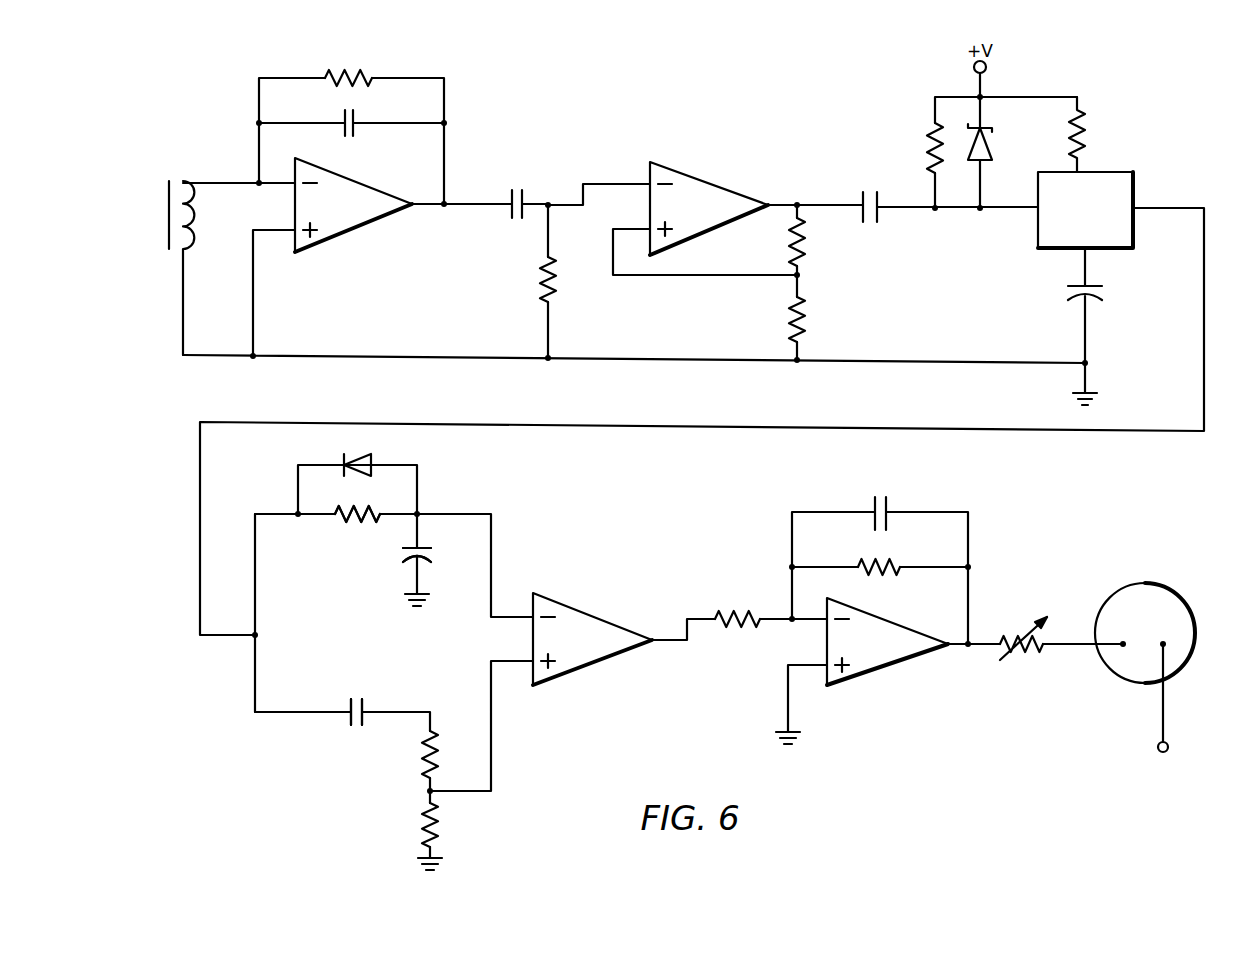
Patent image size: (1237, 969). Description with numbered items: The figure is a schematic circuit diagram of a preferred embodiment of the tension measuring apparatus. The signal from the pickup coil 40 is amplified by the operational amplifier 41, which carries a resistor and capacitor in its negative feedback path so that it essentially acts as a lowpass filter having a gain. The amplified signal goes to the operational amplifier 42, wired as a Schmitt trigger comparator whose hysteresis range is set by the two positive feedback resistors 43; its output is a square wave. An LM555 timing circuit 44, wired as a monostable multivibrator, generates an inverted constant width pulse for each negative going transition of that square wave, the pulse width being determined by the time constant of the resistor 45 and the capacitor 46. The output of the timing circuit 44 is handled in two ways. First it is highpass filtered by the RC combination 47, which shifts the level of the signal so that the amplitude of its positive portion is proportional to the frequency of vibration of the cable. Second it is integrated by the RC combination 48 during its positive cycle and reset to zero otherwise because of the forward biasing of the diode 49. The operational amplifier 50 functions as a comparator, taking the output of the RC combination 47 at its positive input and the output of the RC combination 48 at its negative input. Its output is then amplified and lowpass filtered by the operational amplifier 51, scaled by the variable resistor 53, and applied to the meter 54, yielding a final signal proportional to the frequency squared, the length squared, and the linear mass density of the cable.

The pickup coil 40 is at (163, 232).
The operational amplifier 41 is at (363, 228).
The operational amplifier 42 is at (768, 180).
The positive feedback resistors 43 is at (800, 325).
The LM555 timing circuit 44 is at (1112, 172).
The resistor 45 is at (1092, 112).
The capacitor 46 is at (1098, 298).
The RC combination 47 is at (357, 774).
The RC combination 48 is at (402, 556).
The diode 49 is at (365, 457).
The operational amplifier 50 is at (565, 603).
The operational amplifier 51 is at (877, 672).
The variable resistor 53 is at (1022, 656).
The meter 54 is at (1178, 585).